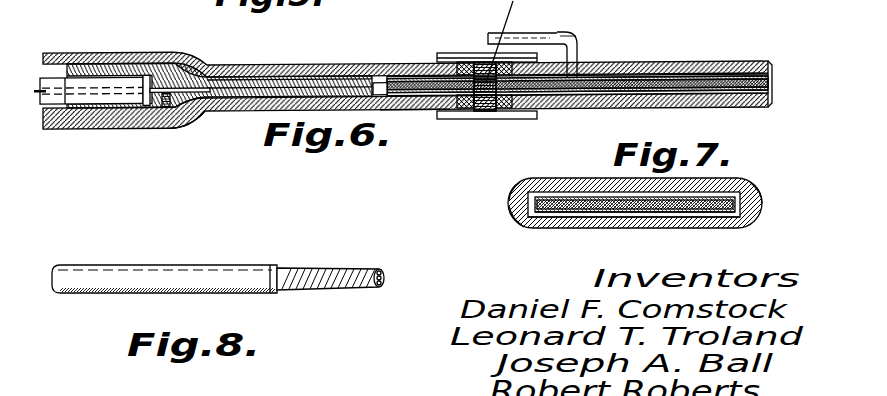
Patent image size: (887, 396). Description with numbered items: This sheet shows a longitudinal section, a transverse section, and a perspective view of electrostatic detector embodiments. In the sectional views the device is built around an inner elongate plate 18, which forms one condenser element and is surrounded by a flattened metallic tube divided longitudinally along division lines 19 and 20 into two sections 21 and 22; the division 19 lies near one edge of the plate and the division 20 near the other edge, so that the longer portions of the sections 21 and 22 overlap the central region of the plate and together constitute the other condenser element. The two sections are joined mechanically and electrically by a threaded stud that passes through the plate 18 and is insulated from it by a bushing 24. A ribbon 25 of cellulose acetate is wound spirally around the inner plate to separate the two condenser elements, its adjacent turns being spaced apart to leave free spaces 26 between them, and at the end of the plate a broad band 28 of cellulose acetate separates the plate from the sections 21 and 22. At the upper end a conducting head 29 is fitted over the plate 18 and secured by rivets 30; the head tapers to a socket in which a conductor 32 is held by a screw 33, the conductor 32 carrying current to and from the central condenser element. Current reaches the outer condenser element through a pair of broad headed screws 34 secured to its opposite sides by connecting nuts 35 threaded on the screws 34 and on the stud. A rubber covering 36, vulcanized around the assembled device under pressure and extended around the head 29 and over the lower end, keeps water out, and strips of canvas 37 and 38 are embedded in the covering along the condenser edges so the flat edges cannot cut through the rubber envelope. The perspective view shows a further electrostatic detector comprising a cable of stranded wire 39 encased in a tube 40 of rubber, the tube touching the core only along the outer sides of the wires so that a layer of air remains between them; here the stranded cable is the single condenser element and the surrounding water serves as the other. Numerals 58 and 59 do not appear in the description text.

In FIG. 6, the inner elongate plate 18 is at (663, 82).
In FIG. 7, the inner elongate plate 18 is at (742, 185).
In FIG. 7, the division line 19 is at (571, 184).
In FIG. 7, the division line 20 is at (733, 223).
In FIG. 7, the tube section 21 is at (596, 184).
In FIG. 7, the tube section 22 is at (686, 220).
In FIG. 6, the bushing 24 is at (470, 84).
In FIG. 6, the ribbon 25 is at (593, 77).
In FIG. 7, the ribbon 25 is at (557, 182).
In FIG. 6, the free spaces 26 is at (685, 90).
In FIG. 6, the broad band 28 is at (451, 114).
In FIG. 6, the conducting head 29 is at (164, 72).
In FIG. 6, the rivets 30 is at (377, 83).
In FIG. 6, the conductor 32 is at (37, 88).
In FIG. 6, the screw 33 is at (181, 131).
In FIG. 6, the broad headed screws 34 is at (481, 79).
In FIG. 6, the connecting nuts 35 is at (505, 80).
In FIG. 6, the covering 36 is at (415, 112).
In FIG. 7, the covering 36 is at (511, 193).
In FIG. 7, the canvas strip 37 is at (537, 229).
In FIG. 7, the canvas strip 38 is at (758, 205).
In FIG. 8, the cable of stranded wire 39 is at (383, 268).
In FIG. 8, the tube 40 is at (240, 267).
In FIG. 6, the lead tube 58 is at (574, 72).
In FIG. 6, the lead wire 59 is at (538, 34).